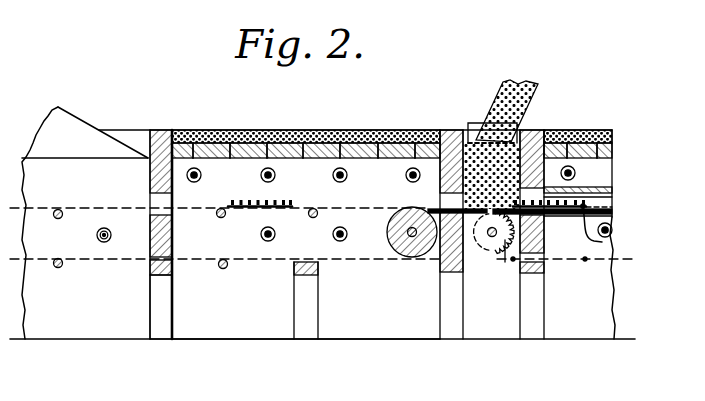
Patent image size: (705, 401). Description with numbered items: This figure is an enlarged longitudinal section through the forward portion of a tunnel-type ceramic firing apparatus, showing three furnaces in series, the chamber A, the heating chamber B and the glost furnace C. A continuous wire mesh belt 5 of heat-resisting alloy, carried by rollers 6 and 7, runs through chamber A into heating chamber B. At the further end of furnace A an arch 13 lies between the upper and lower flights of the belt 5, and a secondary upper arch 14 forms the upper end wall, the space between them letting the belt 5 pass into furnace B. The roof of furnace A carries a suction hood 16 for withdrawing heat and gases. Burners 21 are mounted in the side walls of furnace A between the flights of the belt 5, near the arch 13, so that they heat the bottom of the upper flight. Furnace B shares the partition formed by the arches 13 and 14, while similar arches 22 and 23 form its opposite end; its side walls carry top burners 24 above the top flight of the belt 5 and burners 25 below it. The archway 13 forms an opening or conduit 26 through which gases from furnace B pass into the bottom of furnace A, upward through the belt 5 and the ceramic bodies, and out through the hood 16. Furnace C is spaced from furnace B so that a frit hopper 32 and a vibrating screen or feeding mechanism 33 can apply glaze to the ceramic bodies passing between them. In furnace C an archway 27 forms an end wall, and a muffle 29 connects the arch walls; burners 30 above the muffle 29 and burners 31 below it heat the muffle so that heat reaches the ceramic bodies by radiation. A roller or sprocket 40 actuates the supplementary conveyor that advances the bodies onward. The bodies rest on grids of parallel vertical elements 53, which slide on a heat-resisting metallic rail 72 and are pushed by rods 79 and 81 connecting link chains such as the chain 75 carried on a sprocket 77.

The chamber A is at (70, 328).
The heating chamber B is at (277, 327).
The glost furnace C is at (596, 321).
The continuous wire mesh belt 5 is at (108, 208).
The roller 6 is at (58, 209).
The roller 7 is at (408, 251).
The arch 13 is at (150, 236).
The secondary upper arch 14 is at (152, 168).
The suction hood 16 is at (85, 130).
The burners 21 is at (97, 236).
The arch 22 is at (446, 258).
The arch 23 is at (446, 185).
The top burners 24 is at (332, 176).
The burners 25 is at (332, 235).
The opening or conduit 26 is at (157, 312).
The archway 27 is at (545, 238).
The muffle 29 is at (590, 190).
The burners 30 is at (575, 172).
The burners 31 is at (612, 230).
The frit hopper 32 is at (543, 88).
The vibrating screen or feeding mechanism 33 is at (478, 123).
The roller or sprocket 40 is at (498, 256).
The parallel vertical elements 53 is at (285, 202).
The heat-resisting metallic rail 72 is at (614, 214).
The link chain 75 is at (622, 211).
The sprocket 77 is at (503, 246).
The heat-resisting metallic rod 79 is at (604, 246).
The heat-resisting metallic rod 81 is at (469, 235).